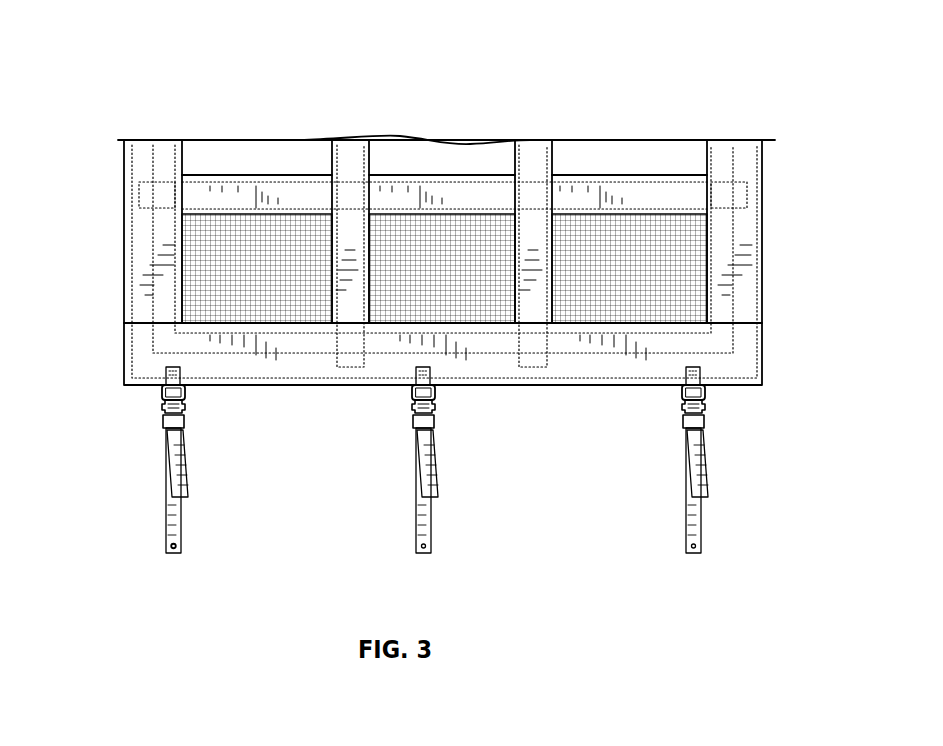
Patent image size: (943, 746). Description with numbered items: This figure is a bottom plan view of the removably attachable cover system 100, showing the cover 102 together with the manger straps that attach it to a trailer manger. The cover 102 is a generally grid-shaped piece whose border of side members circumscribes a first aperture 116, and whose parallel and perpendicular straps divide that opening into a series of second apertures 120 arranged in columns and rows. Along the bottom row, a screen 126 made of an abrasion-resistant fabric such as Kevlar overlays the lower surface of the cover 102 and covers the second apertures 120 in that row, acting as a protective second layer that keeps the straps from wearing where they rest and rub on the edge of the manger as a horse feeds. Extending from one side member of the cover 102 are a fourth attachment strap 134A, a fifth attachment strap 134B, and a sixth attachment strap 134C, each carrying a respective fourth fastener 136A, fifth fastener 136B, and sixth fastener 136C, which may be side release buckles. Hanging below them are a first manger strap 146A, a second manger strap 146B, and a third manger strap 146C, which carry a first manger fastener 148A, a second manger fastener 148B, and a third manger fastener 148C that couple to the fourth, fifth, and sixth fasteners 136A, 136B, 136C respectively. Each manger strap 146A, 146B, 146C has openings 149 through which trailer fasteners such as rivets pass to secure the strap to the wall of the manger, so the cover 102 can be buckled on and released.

The removably attachable cover system 100 is at (152, 43).
The cover 102 is at (147, 246).
The first aperture 116 is at (411, 162).
The second apertures 120 is at (270, 162).
The screen 126 is at (423, 253).
The fourth attachment strap 134A is at (166, 378).
The fifth attachment strap 134B is at (434, 389).
The sixth attachment strap 134C is at (707, 378).
The fourth fastener 136A is at (184, 413).
The fifth fastener 136B is at (434, 411).
The sixth fastener 136C is at (704, 411).
The first manger strap 146A is at (167, 528).
The second manger strap 146B is at (417, 519).
The third manger strap 146C is at (687, 518).
The first manger fastener 148A is at (160, 408).
The second manger fastener 148B is at (412, 406).
The third manger fastener 148C is at (682, 406).
The openings 149 is at (163, 554).